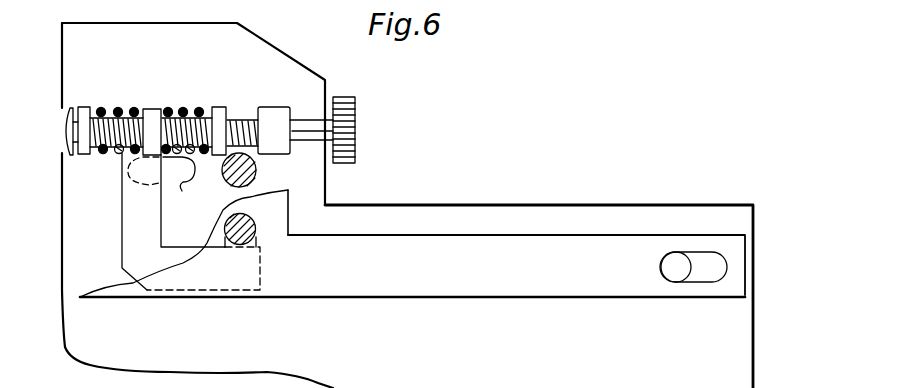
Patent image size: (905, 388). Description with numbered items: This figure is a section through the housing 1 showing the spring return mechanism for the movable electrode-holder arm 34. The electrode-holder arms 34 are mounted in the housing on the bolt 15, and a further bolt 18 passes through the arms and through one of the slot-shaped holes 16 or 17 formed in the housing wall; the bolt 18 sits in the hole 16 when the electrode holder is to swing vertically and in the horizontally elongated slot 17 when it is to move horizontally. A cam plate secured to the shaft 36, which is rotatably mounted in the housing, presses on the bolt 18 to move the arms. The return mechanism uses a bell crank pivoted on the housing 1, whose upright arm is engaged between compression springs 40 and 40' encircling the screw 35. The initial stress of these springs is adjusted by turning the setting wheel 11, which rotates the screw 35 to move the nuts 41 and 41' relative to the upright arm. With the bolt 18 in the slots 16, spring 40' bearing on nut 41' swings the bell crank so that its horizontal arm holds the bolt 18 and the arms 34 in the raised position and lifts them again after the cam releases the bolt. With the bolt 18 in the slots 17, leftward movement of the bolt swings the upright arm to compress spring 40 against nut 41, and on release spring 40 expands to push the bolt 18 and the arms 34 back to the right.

The housing 1 is at (549, 352).
The setting wheel 11 is at (348, 118).
The bolt 15 is at (678, 262).
The slot-shaped hole 16 is at (256, 234).
The slot-shaped hole 17 is at (165, 184).
The bolt 18 is at (250, 223).
The electrode-holder arm 34 is at (440, 282).
The screw 35 is at (265, 108).
The shaft 36 is at (256, 174).
The compression spring 40 is at (142, 119).
The compression spring 40' is at (204, 113).
The nut 41 is at (100, 111).
The nut 41' is at (252, 114).